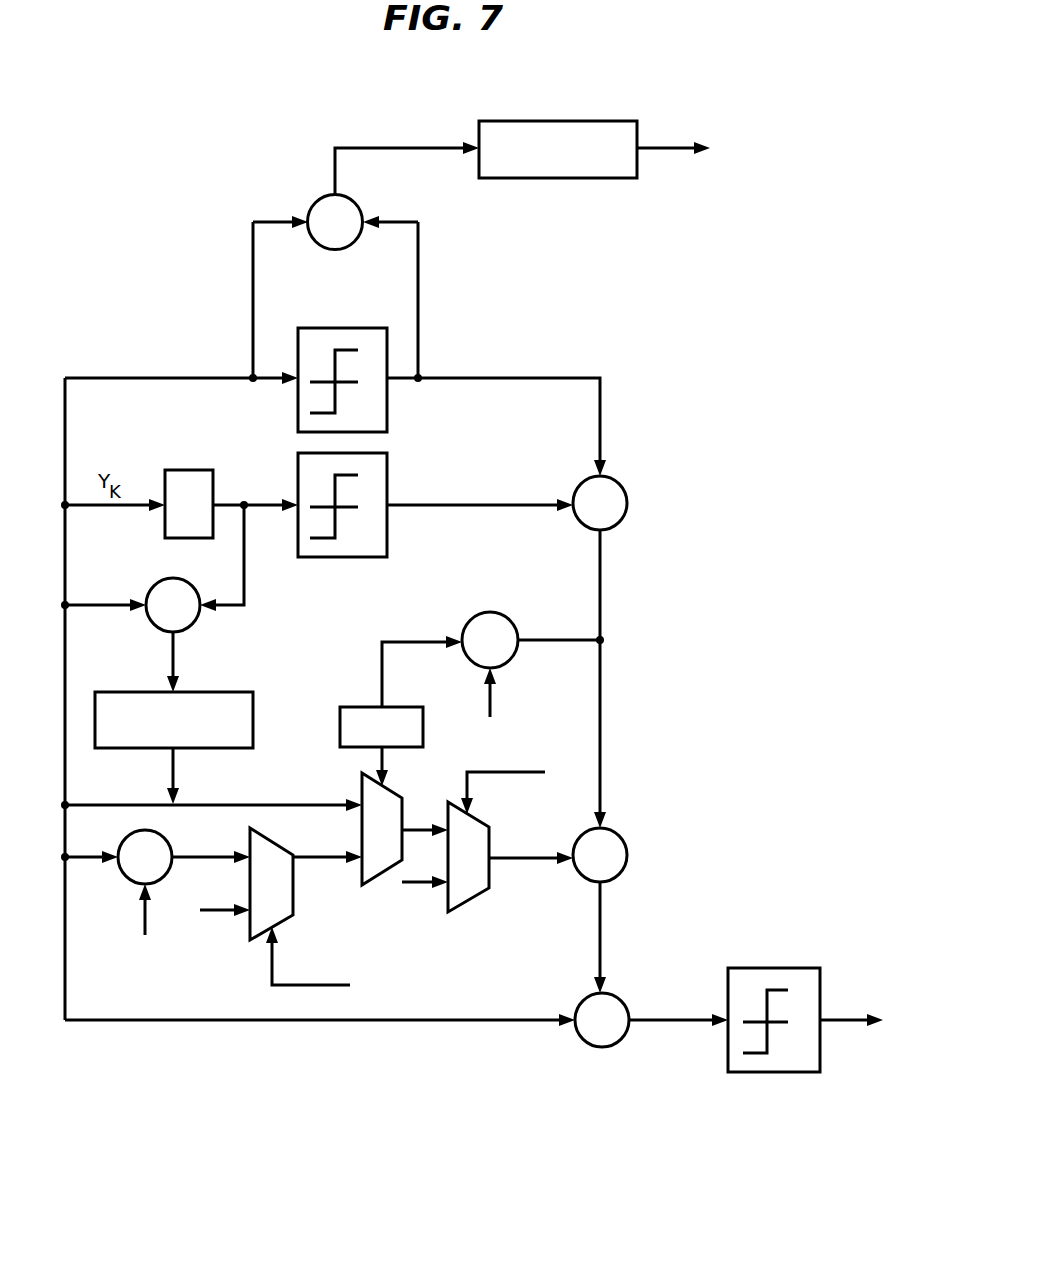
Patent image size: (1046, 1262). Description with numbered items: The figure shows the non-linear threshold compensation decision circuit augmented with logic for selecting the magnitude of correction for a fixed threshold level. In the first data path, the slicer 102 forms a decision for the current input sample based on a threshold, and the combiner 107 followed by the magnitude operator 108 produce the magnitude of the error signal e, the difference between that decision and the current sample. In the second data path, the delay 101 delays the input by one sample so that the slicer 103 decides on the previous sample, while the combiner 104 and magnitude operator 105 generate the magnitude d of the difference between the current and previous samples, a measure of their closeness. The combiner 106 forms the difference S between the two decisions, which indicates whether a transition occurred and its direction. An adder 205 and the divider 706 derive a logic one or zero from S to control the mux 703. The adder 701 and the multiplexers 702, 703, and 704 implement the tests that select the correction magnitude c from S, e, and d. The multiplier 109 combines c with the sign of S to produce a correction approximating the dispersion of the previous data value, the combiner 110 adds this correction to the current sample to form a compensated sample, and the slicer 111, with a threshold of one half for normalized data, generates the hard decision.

The delay 101 is at (187, 470).
The slicer 102 is at (335, 328).
The slicer 103 is at (338, 557).
The combiner 104 is at (197, 625).
The magnitude operator 105 is at (255, 725).
The combiner 106 is at (623, 488).
The combiner 107 is at (345, 199).
The magnitude operator 108 is at (562, 121).
The multiplier 109 is at (623, 838).
The combiner 110 is at (625, 1003).
The slicer 111 is at (770, 968).
The adder 205 is at (512, 618).
The adder 701 is at (170, 838).
The multiplexer 702 is at (283, 840).
The multiplexer 703 is at (375, 885).
The multiplexer 704 is at (468, 905).
The divider 706 is at (350, 705).